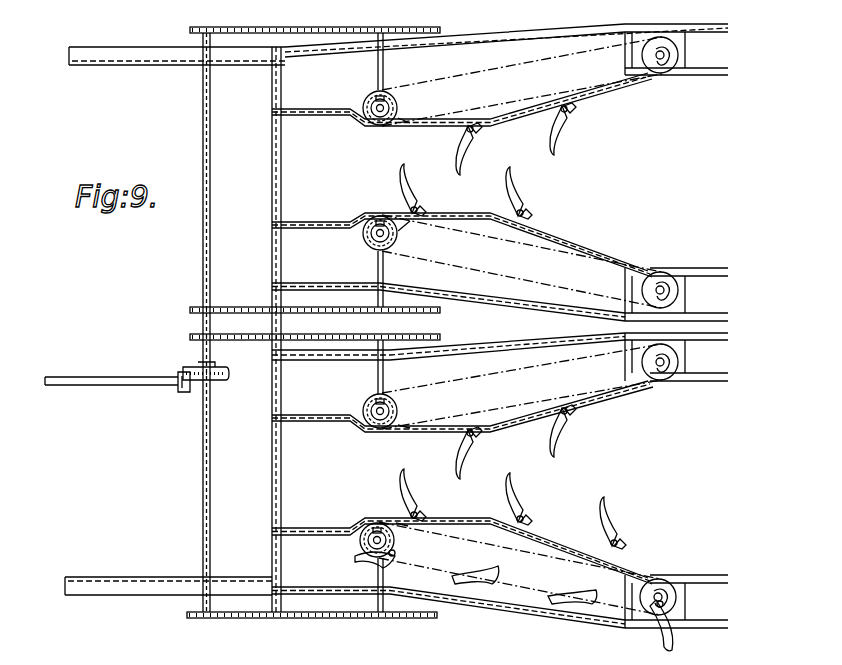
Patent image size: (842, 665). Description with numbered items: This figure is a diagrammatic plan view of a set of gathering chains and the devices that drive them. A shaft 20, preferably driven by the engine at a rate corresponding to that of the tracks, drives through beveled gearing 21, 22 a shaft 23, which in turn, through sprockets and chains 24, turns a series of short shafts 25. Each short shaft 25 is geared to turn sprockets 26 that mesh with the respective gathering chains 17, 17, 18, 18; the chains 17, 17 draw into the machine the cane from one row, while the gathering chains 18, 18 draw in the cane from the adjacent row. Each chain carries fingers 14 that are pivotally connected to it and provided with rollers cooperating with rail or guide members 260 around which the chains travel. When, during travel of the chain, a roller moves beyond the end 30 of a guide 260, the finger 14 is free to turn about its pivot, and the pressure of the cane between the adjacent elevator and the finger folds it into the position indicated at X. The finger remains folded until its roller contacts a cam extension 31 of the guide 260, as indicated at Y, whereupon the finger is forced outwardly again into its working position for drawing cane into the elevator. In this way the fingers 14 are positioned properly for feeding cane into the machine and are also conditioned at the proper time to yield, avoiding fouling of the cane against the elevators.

The fingers 14 is at (478, 152).
The gathering chains 17 is at (588, 410).
The gathering chains 18 is at (610, 95).
The shaft 20 is at (100, 377).
The beveled gearing 21 is at (183, 392).
The beveled gearing 22 is at (222, 380).
The shaft 23 is at (212, 190).
The sprockets and chains 24 is at (306, 27).
The short shafts 25 is at (378, 70).
The sprockets 26 is at (363, 105).
The end of guide 30 is at (410, 123).
The cam extension 31 is at (680, 60).
The rail or guide members 260 is at (532, 107).
The folded finger position X is at (362, 560).
The finger resetting position Y is at (655, 608).